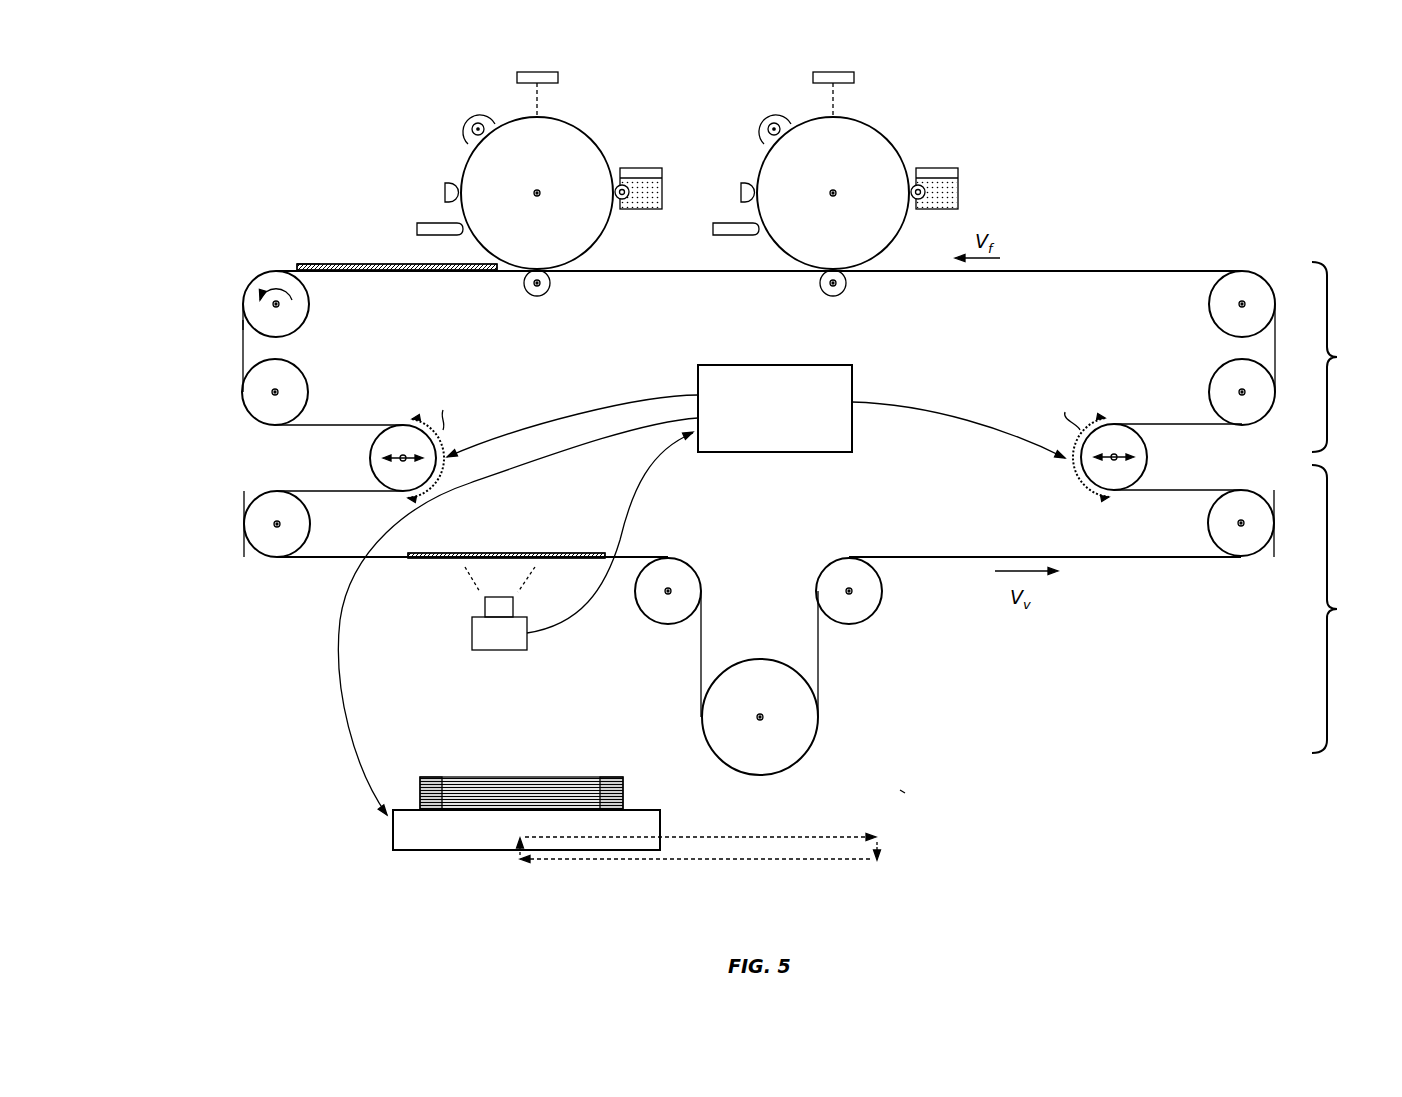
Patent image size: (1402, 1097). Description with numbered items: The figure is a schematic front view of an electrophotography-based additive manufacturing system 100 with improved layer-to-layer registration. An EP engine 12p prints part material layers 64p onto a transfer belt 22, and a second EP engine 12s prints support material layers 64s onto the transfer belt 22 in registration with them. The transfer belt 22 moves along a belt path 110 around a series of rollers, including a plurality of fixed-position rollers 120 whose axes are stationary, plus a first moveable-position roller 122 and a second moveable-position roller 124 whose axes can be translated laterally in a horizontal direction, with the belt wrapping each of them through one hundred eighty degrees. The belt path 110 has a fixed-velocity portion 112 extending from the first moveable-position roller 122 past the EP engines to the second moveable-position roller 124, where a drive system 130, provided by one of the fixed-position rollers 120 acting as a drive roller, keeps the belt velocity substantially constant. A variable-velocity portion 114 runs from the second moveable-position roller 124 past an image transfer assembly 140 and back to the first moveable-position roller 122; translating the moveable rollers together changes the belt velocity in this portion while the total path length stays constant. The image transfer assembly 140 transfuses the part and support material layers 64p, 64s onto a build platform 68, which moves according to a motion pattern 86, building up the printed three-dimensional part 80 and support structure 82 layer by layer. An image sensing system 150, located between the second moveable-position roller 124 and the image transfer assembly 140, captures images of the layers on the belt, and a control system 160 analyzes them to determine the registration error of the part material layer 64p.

The electrophotography-based additive manufacturing system 100 is at (273, 107).
The EP engine 12p is at (583, 115).
The EP engine 12s is at (880, 116).
The transfer belt 22 is at (1060, 270).
The belt path 110 is at (221, 323).
The fixed-velocity portion 112 is at (1337, 357).
The variable-velocity portion 114 is at (1337, 609).
The fixed-position rollers 120 is at (308, 300).
The first moveable-position roller 122 is at (1150, 457).
The second moveable-position roller 124 is at (369, 458).
The drive system 130 is at (258, 264).
The part material layers 64p is at (332, 263).
The support material layers 64s is at (365, 262).
The image sensing system 150 is at (472, 633).
The control system 160 is at (775, 365).
The image transfer assembly 140 is at (905, 793).
The printed 3D part 80 is at (480, 777).
The support structure 82 is at (428, 777).
The build platform 68 is at (392, 832).
The motion pattern 86 is at (642, 860).